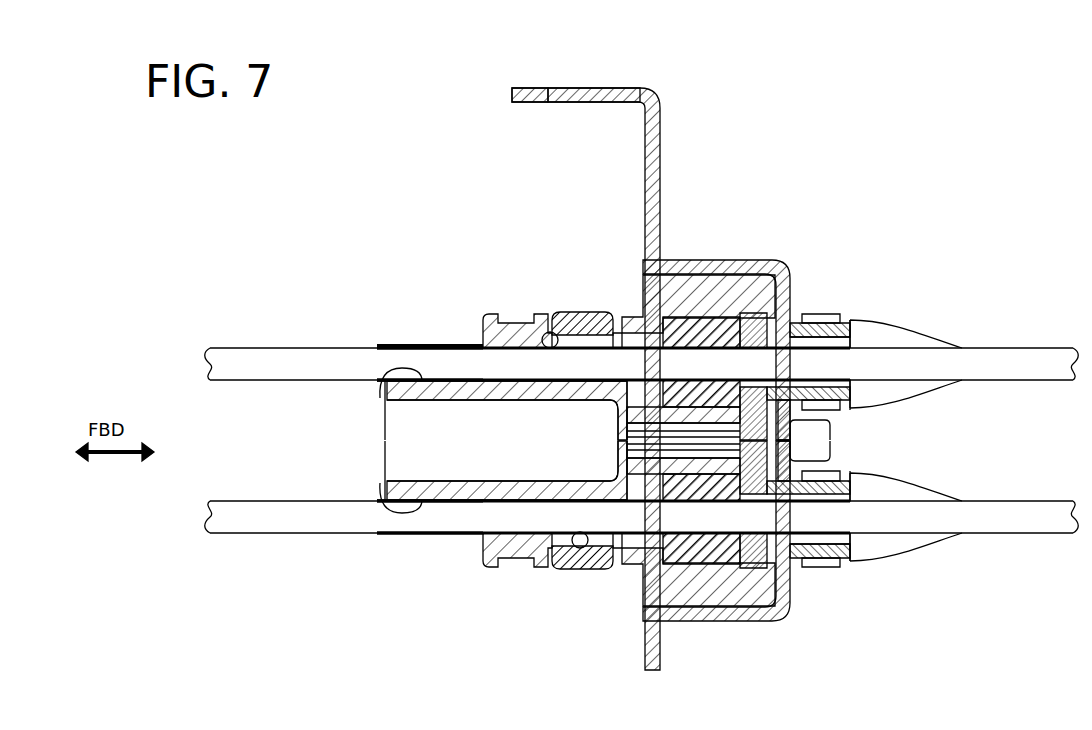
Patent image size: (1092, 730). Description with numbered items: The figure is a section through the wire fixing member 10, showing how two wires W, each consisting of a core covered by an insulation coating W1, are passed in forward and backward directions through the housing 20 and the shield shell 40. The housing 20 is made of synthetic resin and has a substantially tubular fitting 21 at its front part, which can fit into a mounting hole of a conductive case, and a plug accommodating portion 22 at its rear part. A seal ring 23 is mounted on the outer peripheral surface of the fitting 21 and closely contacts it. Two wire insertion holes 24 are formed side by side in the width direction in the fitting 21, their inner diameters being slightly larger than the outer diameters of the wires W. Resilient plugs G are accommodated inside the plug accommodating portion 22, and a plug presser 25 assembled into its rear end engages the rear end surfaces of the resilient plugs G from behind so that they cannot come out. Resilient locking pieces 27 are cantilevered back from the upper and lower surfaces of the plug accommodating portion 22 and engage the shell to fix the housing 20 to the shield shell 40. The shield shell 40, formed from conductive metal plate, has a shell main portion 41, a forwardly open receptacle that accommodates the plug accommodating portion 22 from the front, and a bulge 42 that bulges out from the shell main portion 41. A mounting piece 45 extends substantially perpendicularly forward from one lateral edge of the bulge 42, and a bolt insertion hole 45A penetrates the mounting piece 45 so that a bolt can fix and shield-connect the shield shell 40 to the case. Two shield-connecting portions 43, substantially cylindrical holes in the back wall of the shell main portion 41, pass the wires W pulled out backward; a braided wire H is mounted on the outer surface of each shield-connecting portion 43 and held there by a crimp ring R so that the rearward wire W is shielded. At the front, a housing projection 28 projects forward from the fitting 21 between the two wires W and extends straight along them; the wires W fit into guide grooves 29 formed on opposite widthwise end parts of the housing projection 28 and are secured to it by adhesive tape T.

The wiring fixing member 10 is at (777, 172).
The housing 20 is at (515, 289).
The fitting 21 is at (508, 566).
The plug accommodating portion 22 is at (708, 290).
The seal ring 23 is at (600, 312).
The wire insertion holes 24 is at (551, 332).
The plug presser 25 is at (782, 318).
The resilient locking pieces 27 is at (840, 451).
The housing projection 28 is at (438, 490).
The guide grooves 29 is at (380, 386).
The shield shell 40 is at (778, 641).
The shell main portion 41 is at (742, 268).
The bulge 42 is at (660, 176).
The shield-connecting portions 43 is at (820, 320).
The mounting piece 45 is at (522, 95).
The bolt insertion hole 45A is at (600, 95).
The resilient plugs G is at (690, 335).
The braided wire H is at (893, 322).
The crimp ring R is at (833, 320).
The adhesive tape T is at (407, 345).
The wire W is at (952, 333).
The insulation coating W1 is at (298, 522).